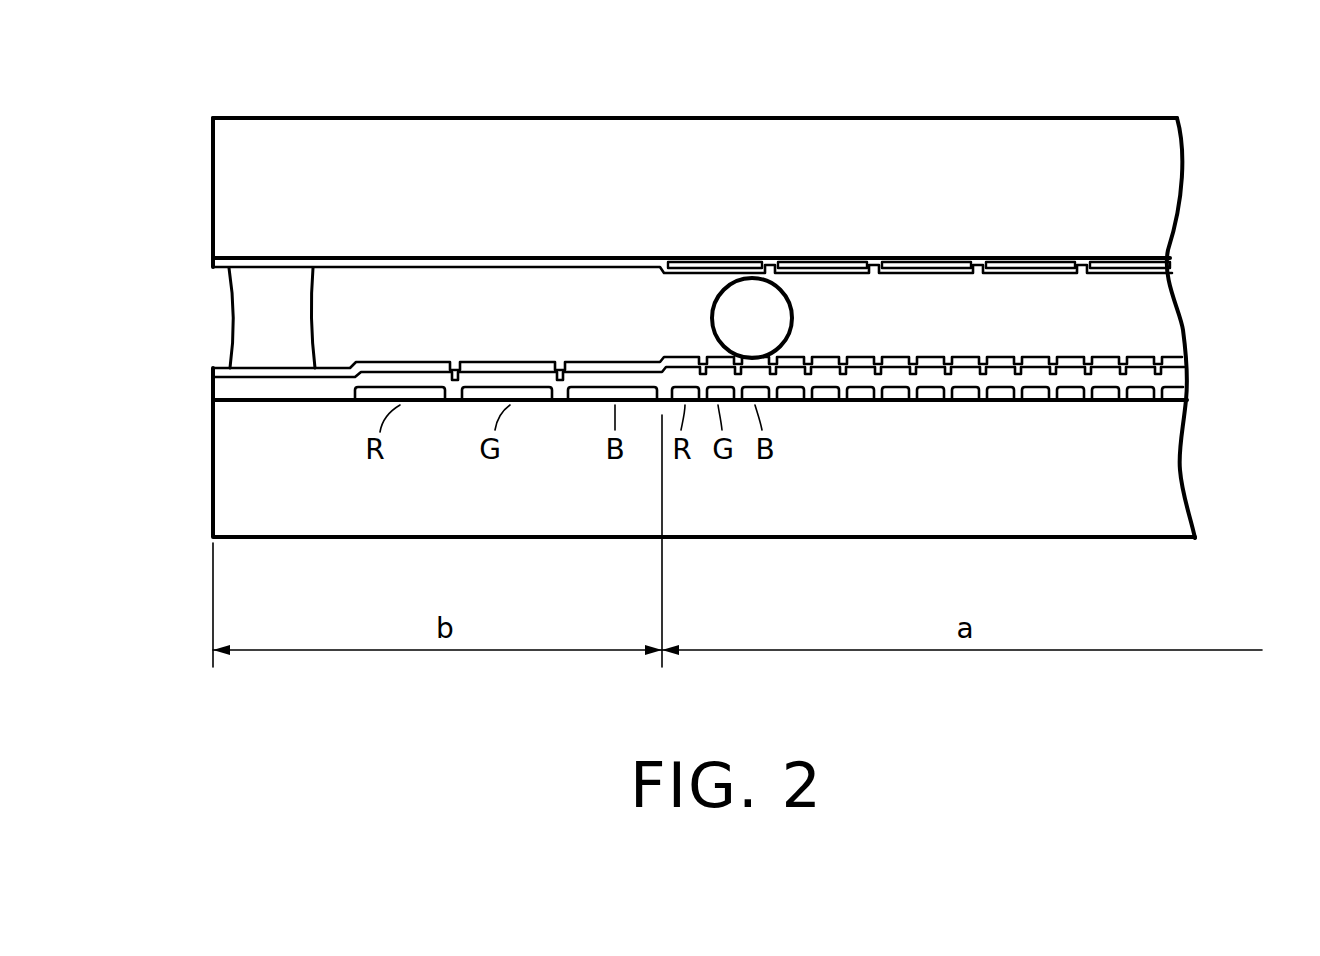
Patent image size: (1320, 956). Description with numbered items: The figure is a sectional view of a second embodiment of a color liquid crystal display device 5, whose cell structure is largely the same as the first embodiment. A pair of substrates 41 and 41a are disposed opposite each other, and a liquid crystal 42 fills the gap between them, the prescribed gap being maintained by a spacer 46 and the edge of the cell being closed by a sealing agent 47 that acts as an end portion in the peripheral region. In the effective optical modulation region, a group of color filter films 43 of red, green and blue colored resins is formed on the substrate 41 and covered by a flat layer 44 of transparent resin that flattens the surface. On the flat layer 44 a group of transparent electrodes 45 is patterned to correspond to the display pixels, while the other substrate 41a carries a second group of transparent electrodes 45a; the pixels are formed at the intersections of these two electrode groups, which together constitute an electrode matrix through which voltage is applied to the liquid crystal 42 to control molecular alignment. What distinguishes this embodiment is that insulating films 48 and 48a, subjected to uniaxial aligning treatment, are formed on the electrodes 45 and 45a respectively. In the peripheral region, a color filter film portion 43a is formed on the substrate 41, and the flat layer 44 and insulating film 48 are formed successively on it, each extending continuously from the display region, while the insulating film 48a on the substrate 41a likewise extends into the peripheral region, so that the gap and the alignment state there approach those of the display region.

The color liquid crystal display device 5 is at (397, 113).
The substrate 41 is at (1160, 483).
The substrate 41a is at (990, 143).
The liquid crystal 42 is at (1163, 318).
The group of color filter films 43 is at (1178, 407).
The color filter film portion 43a is at (540, 402).
The flat layer 44 is at (1181, 393).
The group of transparent electrodes 45 is at (1178, 378).
The group of transparent electrodes 45a is at (1150, 256).
The spacer 46 is at (778, 322).
The sealing agent 47 is at (245, 328).
The insulating film 48 is at (1175, 357).
The insulating film 48a is at (1172, 270).